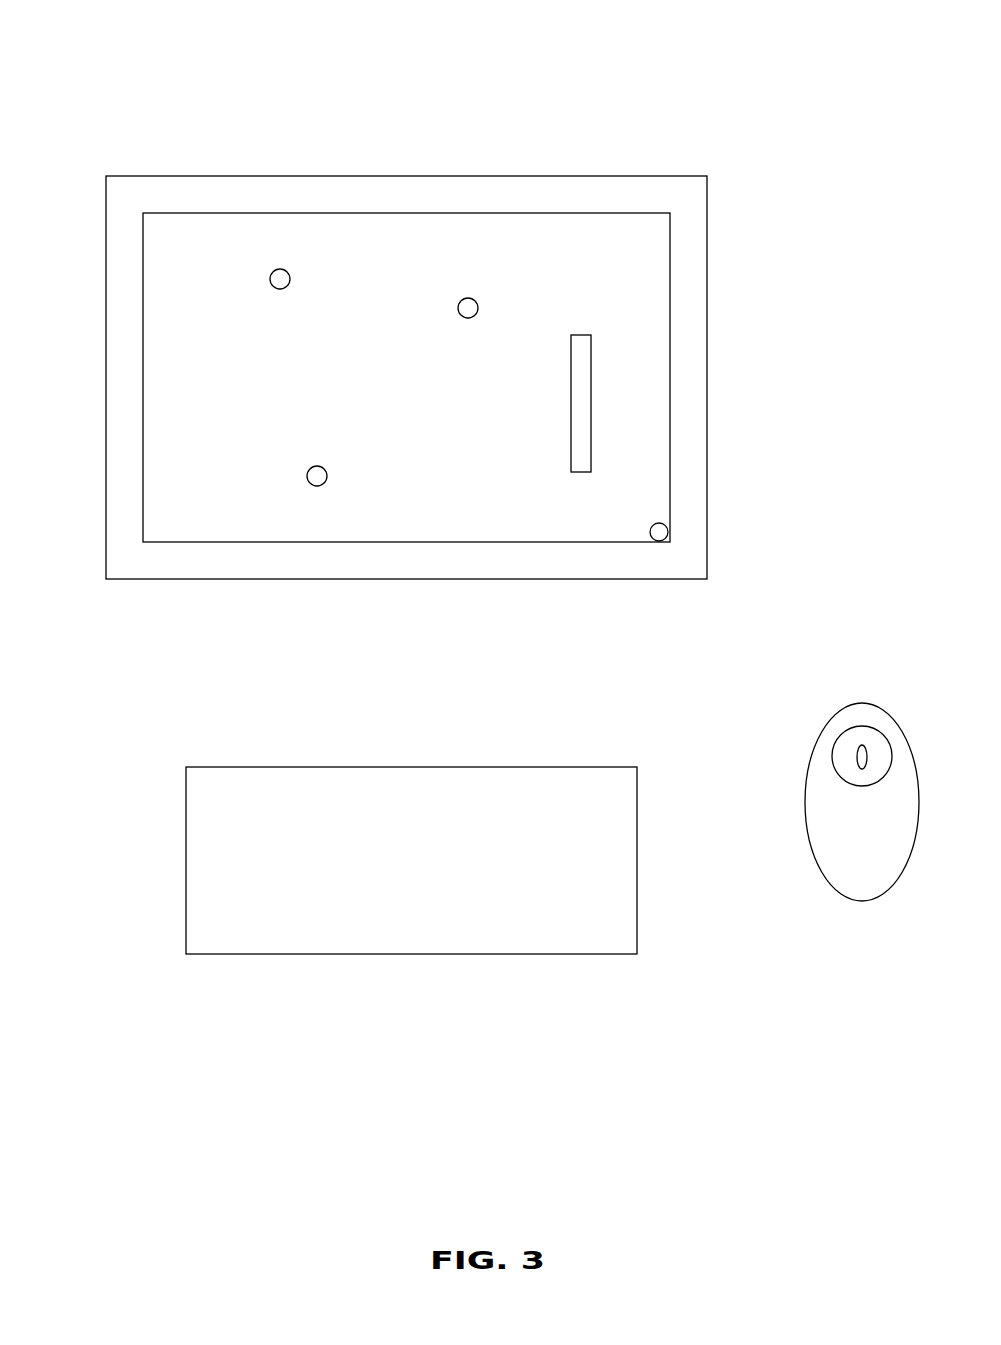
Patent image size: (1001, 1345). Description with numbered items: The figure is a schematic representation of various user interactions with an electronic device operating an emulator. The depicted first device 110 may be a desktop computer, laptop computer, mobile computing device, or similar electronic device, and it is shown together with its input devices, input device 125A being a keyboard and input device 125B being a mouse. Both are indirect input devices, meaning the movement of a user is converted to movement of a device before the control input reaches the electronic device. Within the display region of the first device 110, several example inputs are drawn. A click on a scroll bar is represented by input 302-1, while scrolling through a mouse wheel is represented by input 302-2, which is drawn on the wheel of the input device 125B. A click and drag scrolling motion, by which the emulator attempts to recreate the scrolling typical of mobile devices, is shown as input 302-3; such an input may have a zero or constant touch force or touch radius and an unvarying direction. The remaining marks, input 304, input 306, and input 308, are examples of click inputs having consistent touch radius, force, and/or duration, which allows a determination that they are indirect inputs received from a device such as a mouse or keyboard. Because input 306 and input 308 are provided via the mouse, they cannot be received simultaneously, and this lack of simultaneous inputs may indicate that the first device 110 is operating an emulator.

The first device 110 is at (156, 91).
The input 308 is at (277, 269).
The input 306 is at (470, 298).
The input 304 is at (315, 486).
The input 302-3 is at (593, 400).
The input 302-1 is at (666, 525).
The input 302-2 is at (860, 746).
The input device 125A is at (186, 868).
The input device 125B is at (860, 903).